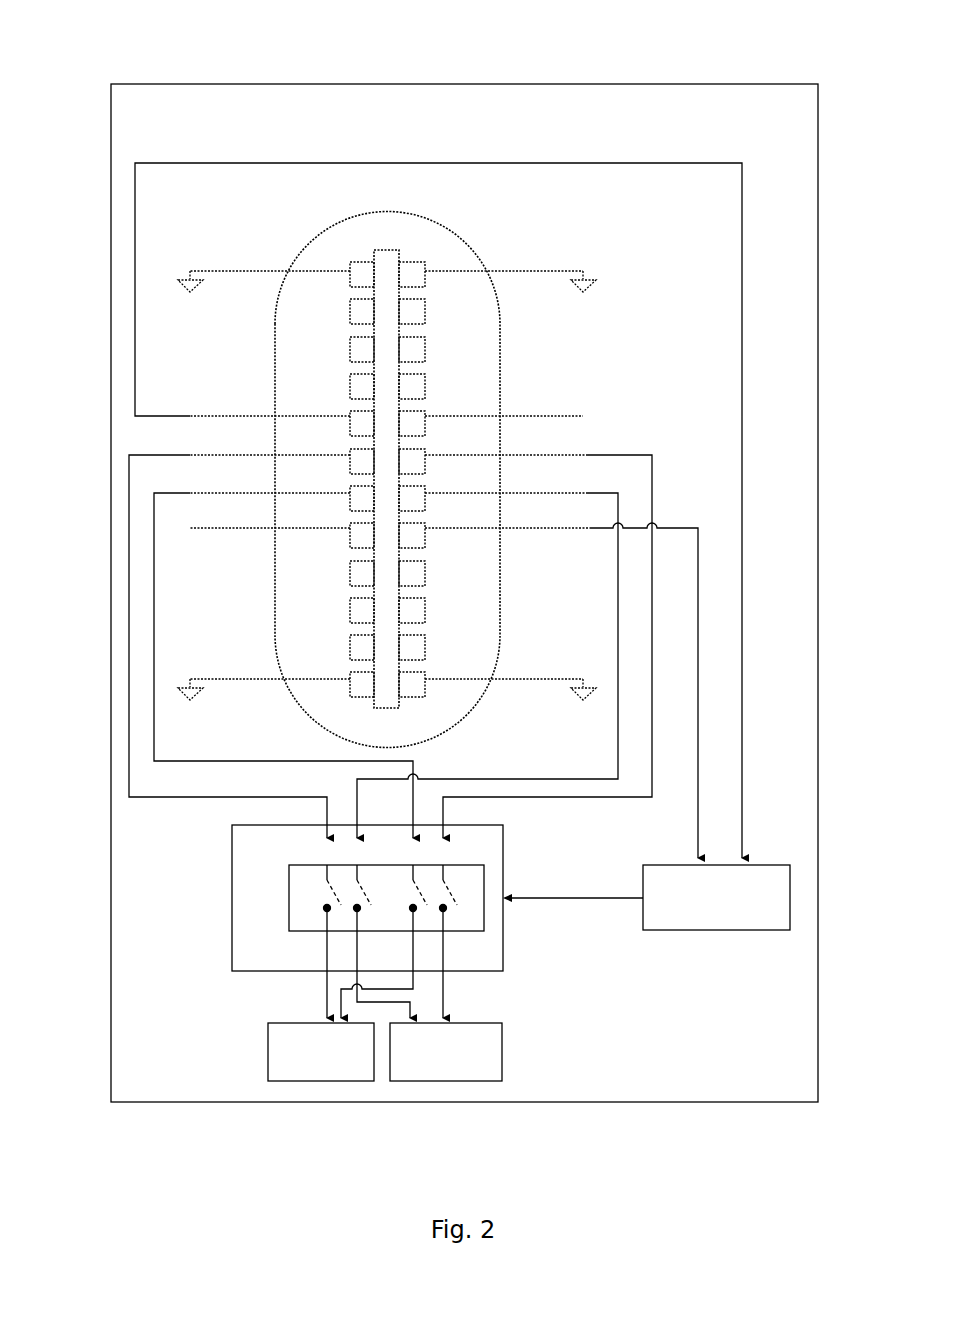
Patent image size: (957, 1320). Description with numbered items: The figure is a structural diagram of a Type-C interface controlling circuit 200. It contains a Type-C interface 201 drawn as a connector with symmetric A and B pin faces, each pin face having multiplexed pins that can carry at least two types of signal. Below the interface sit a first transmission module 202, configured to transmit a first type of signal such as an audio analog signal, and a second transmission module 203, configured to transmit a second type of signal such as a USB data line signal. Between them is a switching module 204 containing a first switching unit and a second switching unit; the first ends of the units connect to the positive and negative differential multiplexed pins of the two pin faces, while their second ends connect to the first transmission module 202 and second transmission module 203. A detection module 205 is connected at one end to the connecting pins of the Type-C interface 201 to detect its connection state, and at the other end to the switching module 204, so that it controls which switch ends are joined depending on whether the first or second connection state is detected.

The Type-C interface controlling circuit 200 is at (497, 84).
The Type-C interface 201 is at (345, 218).
The first transmission module 202 is at (325, 1081).
The second transmission module 203 is at (455, 1081).
The switching module 204 is at (232, 898).
The detection module 205 is at (790, 893).